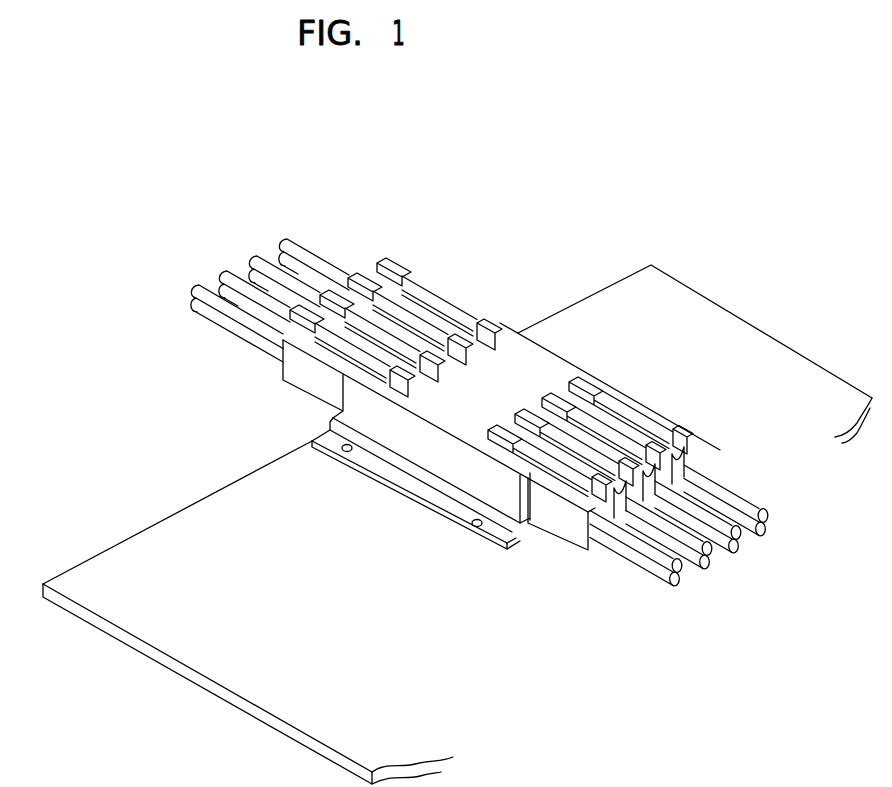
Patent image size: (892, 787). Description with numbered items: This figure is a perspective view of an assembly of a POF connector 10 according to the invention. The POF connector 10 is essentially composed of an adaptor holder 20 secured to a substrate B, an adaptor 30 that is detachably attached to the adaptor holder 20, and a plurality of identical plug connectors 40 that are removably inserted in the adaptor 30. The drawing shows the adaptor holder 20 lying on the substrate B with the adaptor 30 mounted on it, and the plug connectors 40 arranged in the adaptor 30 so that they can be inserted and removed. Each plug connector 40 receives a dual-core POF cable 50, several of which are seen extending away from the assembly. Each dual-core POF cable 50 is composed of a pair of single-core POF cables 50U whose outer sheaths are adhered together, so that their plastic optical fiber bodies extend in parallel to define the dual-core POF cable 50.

The POF connector 10 is at (591, 252).
The adaptor holder 20 is at (379, 483).
The adaptor 30 is at (509, 355).
The plug connector 40 is at (435, 288).
The dual-core POF cable 50 is at (489, 429).
The single-core POF cable 50U is at (678, 566).
The substrate B is at (157, 548).